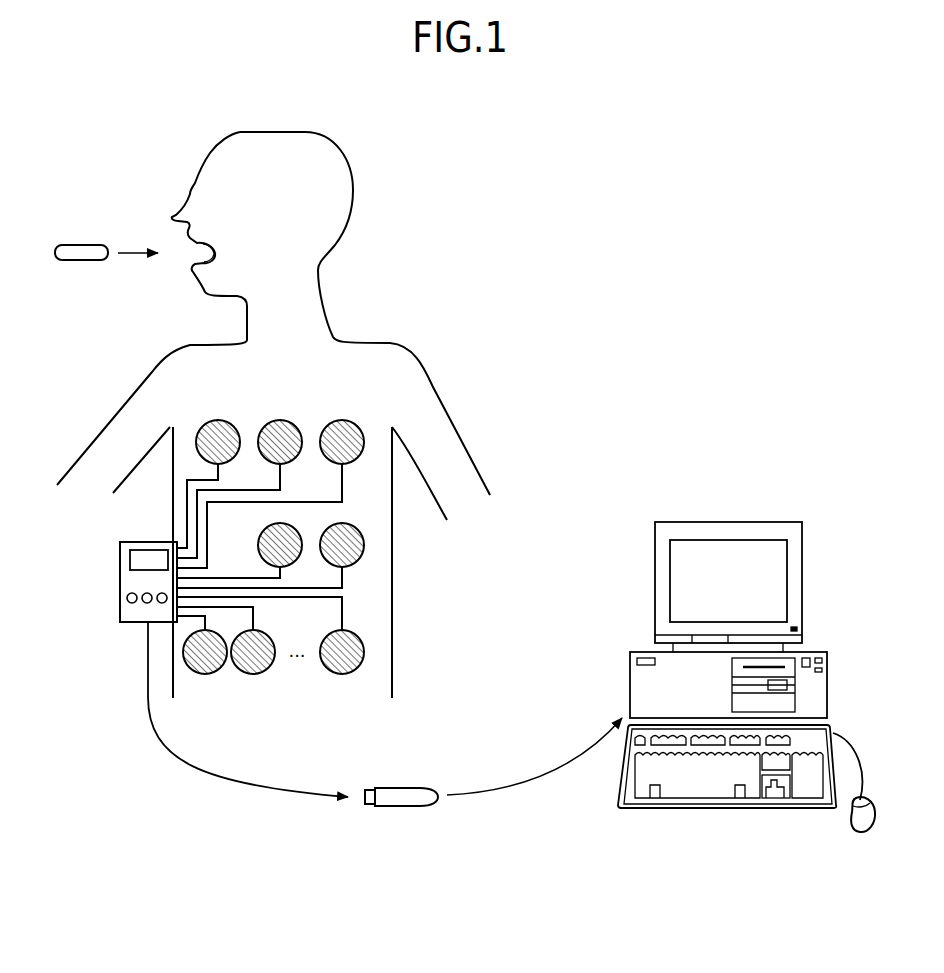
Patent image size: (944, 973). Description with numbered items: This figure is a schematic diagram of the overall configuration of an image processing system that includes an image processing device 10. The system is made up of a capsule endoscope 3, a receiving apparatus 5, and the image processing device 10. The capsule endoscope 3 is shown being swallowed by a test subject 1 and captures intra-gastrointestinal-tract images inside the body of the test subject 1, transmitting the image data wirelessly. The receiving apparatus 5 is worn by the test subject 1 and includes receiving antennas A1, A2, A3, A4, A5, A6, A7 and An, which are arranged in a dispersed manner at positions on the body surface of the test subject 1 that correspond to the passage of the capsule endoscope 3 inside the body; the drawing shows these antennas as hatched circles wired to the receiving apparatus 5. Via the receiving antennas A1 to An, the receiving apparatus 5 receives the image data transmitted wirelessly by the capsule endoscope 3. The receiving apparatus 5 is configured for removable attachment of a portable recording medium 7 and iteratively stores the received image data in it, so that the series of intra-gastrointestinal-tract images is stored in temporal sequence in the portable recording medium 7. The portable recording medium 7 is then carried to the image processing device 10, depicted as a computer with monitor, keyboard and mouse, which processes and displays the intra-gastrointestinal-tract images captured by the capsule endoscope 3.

The test subject 1 is at (308, 133).
The capsule endoscope 3 is at (85, 245).
The receiving apparatus 5 is at (120, 560).
The portable recording medium 7 is at (420, 787).
The image processing device 10 is at (694, 500).
The receiving antenna A1 is at (218, 420).
The receiving antenna A2 is at (280, 420).
The receiving antenna A3 is at (342, 420).
The receiving antenna A4 is at (258, 545).
The receiving antenna A5 is at (352, 523).
The receiving antenna A6 is at (206, 675).
The receiving antenna A7 is at (254, 675).
The receiving antenna An is at (343, 675).